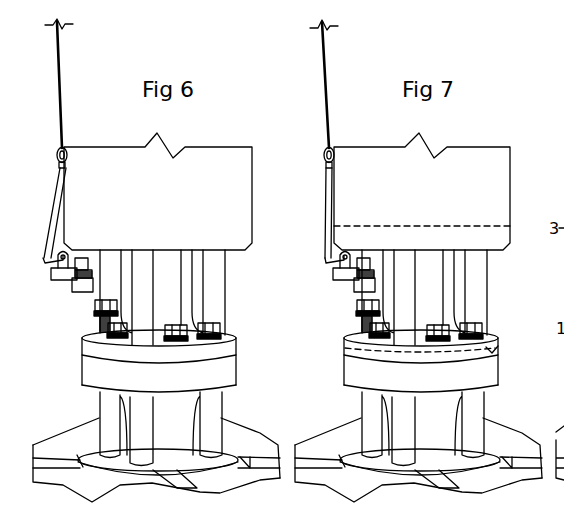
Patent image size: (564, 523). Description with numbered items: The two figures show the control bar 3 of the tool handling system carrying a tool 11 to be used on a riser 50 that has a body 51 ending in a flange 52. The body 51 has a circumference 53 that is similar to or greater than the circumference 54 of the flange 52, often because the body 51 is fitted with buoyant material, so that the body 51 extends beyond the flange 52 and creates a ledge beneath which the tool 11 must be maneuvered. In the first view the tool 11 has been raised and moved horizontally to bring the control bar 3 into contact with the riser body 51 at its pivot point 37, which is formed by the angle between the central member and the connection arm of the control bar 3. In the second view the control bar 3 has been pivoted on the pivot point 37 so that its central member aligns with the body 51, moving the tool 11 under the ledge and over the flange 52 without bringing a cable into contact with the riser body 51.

In FIG. 6, the control bar 3 is at (52, 216).
In FIG. 7, the control bar 3 is at (325, 238).
In FIG. 6, the tool 11 is at (62, 278).
In FIG. 7, the tool 11 is at (345, 279).
In FIG. 6, the pivot point 37 is at (67, 175).
In FIG. 6, the riser 50 is at (184, 191).
In FIG. 7, the riser 50 is at (449, 197).
In FIG. 6, the body 51 is at (245, 178).
In FIG. 7, the body 51 is at (506, 178).
In FIG. 6, the flange 52 is at (85, 372).
In FIG. 7, the flange 52 is at (352, 371).
In FIG. 7, the circumference 53 is at (497, 227).
In FIG. 7, the circumference 54 is at (500, 350).